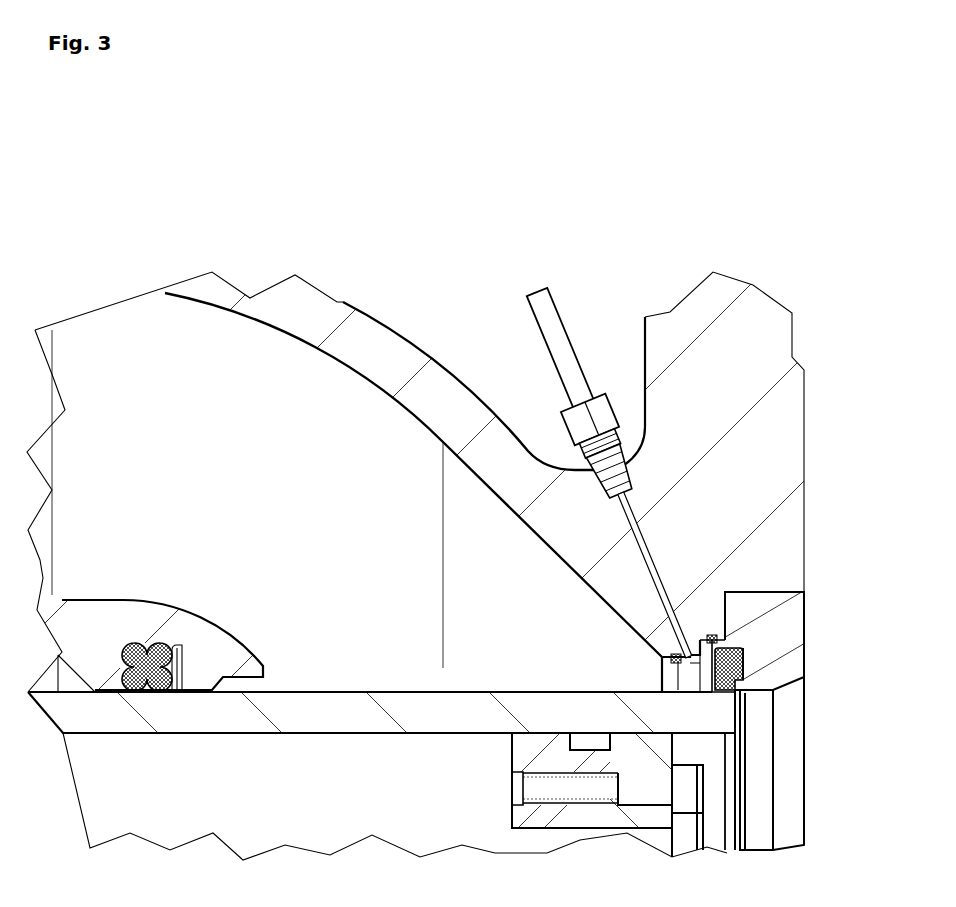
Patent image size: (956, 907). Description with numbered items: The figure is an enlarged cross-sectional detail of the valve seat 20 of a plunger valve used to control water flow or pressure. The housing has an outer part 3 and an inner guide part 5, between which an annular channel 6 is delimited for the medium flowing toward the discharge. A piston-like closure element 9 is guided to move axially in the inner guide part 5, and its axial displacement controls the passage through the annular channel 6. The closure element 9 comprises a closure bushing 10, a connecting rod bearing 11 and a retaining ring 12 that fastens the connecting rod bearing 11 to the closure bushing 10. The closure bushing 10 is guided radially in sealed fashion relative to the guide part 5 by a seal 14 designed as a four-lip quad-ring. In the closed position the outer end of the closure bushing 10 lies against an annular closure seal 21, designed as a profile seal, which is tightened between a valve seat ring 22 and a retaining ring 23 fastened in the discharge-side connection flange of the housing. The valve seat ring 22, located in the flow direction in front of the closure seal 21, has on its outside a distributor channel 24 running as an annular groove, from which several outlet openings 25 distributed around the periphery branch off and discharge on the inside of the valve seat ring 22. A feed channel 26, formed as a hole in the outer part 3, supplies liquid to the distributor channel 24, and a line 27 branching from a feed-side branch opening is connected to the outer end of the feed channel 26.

The outer part 3 is at (315, 323).
The inner guide part 5 is at (82, 633).
The annular channel 6 is at (392, 455).
The closure element 9 is at (430, 690).
The closure bushing 10 is at (318, 712).
The connecting rod bearing 11 is at (528, 750).
The retaining ring 12 is at (625, 750).
The seal 14 is at (148, 665).
The valve seat 20 is at (713, 617).
The closure seal 21 is at (733, 657).
The valve seat ring 22 is at (683, 667).
The retaining ring 23 is at (767, 642).
The distributor channel 24 is at (697, 653).
The outlet openings 25 is at (694, 675).
The feed channels 26 is at (648, 552).
The lines 27 is at (568, 363).